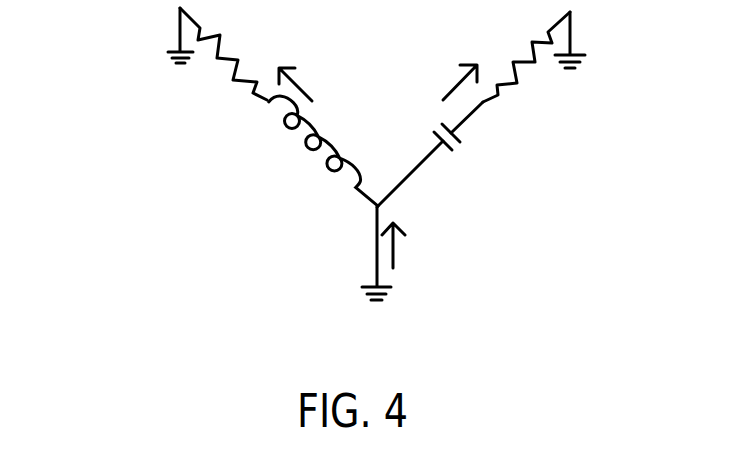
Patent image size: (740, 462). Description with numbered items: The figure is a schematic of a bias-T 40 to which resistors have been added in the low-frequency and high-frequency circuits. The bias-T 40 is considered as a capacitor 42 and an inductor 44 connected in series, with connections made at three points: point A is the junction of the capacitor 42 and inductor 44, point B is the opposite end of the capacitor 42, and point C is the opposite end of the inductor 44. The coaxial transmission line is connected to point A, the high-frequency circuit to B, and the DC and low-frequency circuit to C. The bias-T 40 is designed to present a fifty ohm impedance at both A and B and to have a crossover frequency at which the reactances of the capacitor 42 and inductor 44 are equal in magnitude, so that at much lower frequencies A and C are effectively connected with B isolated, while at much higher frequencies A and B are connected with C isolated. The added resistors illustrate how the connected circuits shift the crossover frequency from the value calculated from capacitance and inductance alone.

The bias-T 40 is at (173, 170).
The capacitor 42 is at (460, 160).
The inductor 44 is at (326, 151).